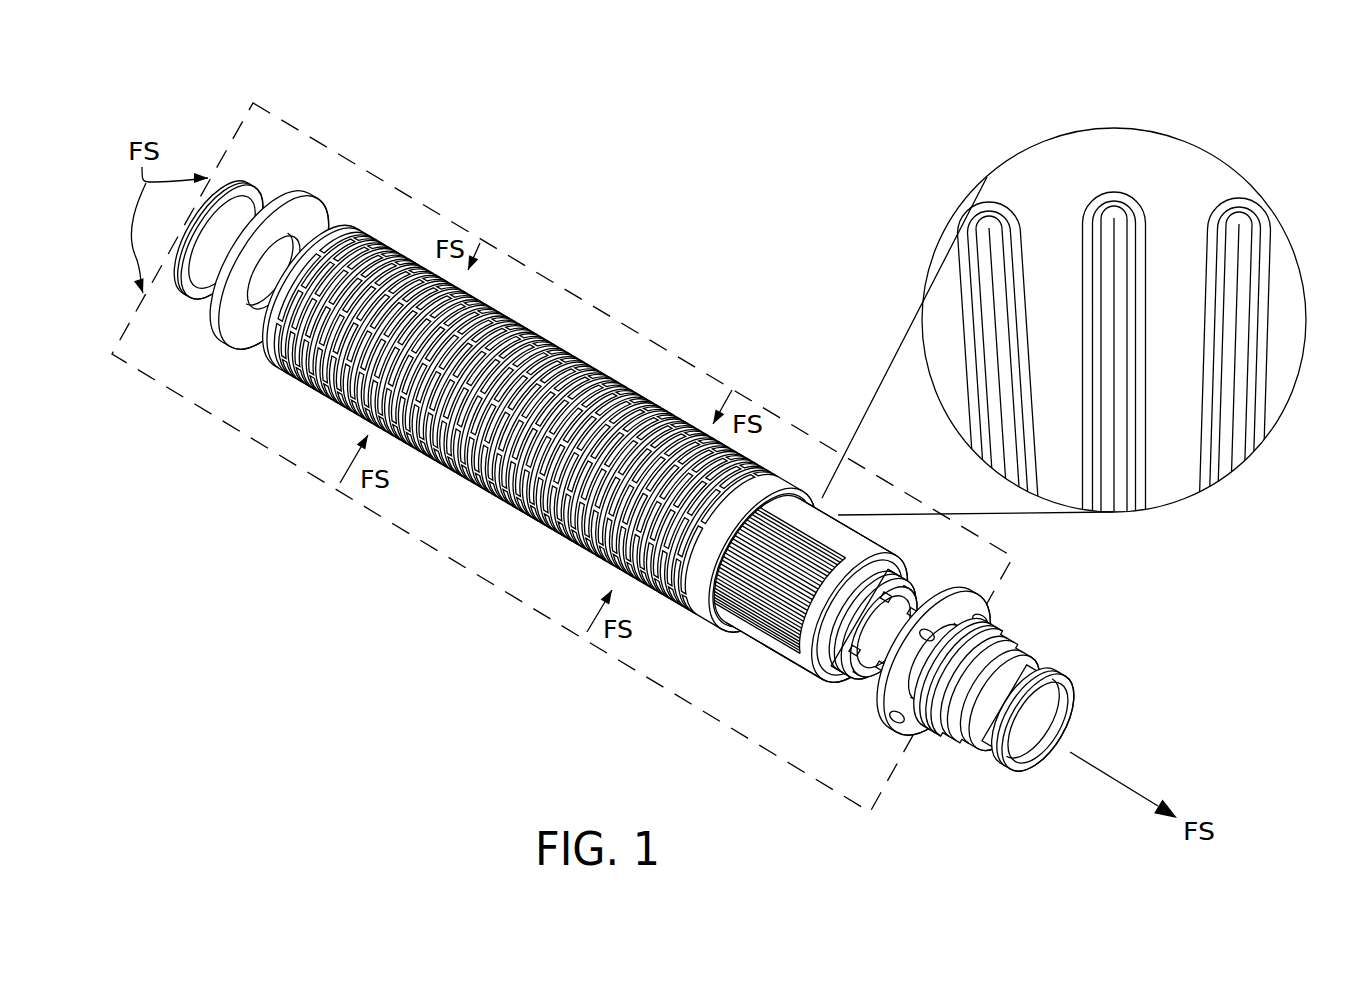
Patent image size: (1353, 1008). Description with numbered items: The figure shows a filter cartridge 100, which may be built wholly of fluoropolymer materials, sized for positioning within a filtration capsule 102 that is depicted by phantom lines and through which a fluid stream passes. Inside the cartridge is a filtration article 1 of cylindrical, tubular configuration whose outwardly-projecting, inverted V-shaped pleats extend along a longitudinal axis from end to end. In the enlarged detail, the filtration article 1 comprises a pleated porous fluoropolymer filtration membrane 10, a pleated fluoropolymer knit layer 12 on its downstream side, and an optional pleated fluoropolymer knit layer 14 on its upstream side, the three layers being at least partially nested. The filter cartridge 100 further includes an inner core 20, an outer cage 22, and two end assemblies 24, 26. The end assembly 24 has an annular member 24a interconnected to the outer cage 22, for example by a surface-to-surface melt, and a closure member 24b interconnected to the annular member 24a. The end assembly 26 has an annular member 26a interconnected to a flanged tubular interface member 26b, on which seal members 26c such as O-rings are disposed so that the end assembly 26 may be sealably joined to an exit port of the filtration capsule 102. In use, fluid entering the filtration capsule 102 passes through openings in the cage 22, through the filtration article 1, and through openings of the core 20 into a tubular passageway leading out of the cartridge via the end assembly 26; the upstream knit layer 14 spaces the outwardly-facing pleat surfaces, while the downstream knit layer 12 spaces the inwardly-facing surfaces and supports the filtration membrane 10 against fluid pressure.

The filtration article 1 is at (884, 539).
The pleated porous fluoropolymer filtration membrane 10 is at (980, 216).
The pleated fluoropolymer knit layer 12 is at (985, 250).
The pleated fluoropolymer knit layer 14 is at (990, 210).
The inner core 20 is at (857, 680).
The outer cage 22 is at (643, 398).
The end assembly 24 is at (275, 170).
The annular member 24a is at (307, 223).
The closure member 24b is at (247, 207).
The end assembly 26 is at (1040, 653).
The annular member 26a is at (907, 740).
The flanged tubular interface member 26b is at (990, 752).
The seal members 26c is at (1023, 770).
The filter cartridge 100 is at (576, 320).
The filtration capsule 102 is at (458, 566).